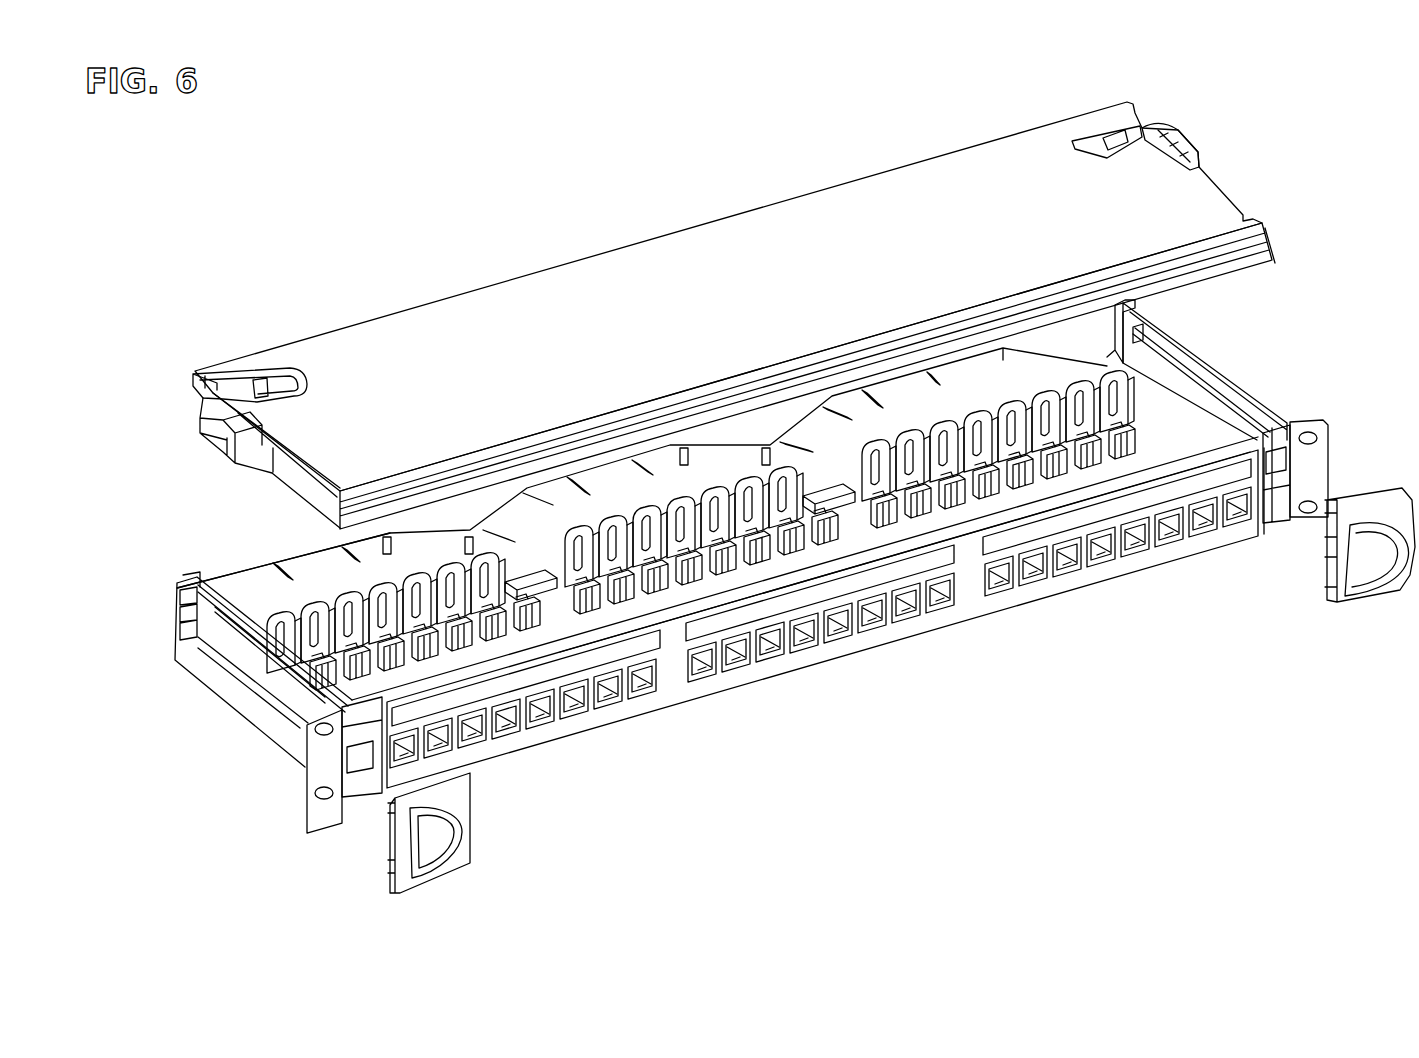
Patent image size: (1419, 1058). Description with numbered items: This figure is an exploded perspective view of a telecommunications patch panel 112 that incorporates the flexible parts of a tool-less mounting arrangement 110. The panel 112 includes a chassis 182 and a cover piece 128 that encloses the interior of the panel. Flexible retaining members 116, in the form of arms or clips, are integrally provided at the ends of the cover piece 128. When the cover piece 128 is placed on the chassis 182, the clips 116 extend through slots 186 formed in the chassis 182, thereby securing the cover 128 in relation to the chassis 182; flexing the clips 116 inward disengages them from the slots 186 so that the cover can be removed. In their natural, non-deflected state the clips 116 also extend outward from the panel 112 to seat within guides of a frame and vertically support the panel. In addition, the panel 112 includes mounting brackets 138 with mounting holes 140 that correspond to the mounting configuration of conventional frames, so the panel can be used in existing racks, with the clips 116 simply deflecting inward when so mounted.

The mounting arrangement 110 is at (701, 301).
The panel 112 is at (746, 596).
The flexible retaining members 116 is at (1159, 128).
The cover piece 128 is at (714, 268).
The mounting brackets 138 is at (315, 777).
The mounting holes 140 is at (324, 795).
The chassis 182 is at (252, 720).
The slots 186 is at (218, 632).